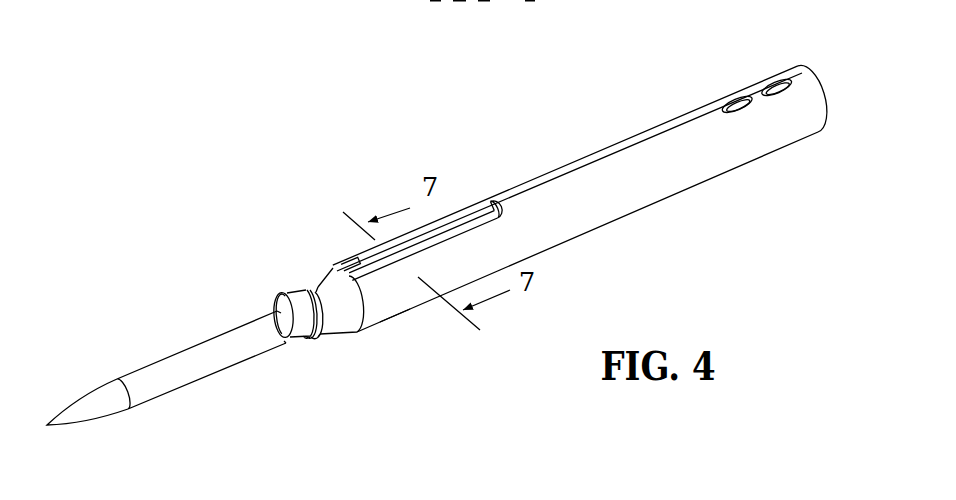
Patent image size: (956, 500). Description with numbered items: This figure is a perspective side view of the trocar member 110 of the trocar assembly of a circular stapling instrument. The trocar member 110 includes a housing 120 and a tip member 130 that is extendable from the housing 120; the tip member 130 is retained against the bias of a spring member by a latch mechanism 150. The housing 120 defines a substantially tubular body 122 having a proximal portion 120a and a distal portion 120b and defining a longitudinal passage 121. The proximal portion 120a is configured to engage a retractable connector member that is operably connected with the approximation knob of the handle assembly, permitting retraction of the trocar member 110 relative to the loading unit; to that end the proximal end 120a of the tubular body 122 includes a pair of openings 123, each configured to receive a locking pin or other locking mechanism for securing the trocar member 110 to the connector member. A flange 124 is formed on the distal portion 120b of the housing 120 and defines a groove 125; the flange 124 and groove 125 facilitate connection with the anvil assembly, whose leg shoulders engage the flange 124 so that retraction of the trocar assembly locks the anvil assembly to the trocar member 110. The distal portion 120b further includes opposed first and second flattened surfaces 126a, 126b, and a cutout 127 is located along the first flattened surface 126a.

The trocar member 110 is at (407, 88).
The housing 120 is at (567, 160).
The proximal portion 120a is at (799, 150).
The distal portion 120b is at (348, 338).
The longitudinal passage 121 is at (283, 343).
The tubular body 122 is at (674, 195).
The openings 123 is at (776, 80).
The flange 124 is at (314, 336).
The groove 125 is at (305, 289).
The first flattened surface 126a is at (467, 214).
The second flattened surface 126b is at (396, 320).
The cutout 127 is at (336, 331).
The tip member 130 is at (150, 335).
The latch mechanism 150 is at (343, 256).